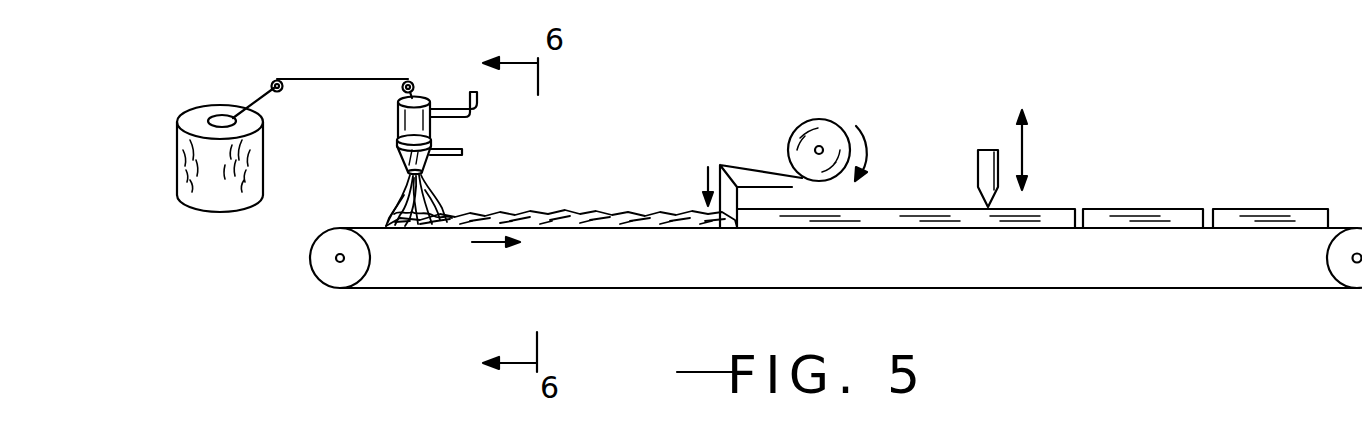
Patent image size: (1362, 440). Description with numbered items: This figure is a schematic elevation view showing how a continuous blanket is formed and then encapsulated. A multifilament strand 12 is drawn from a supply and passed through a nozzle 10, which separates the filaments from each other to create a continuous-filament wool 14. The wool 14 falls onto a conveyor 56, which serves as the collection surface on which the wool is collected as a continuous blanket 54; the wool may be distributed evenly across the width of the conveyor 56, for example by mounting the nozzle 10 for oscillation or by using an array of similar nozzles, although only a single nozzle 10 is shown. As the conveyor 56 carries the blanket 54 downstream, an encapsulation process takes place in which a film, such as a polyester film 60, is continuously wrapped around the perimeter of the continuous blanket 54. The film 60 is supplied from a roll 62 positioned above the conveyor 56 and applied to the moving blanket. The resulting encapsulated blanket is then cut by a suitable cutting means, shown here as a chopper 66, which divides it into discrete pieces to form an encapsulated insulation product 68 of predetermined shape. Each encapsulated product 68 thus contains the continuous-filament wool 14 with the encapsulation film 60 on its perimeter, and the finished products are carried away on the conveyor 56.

The nozzle 10 is at (384, 118).
The multifilament strand 12 is at (345, 79).
The continuous-filament wool 14 is at (406, 195).
The continuous blanket 54 is at (592, 216).
The conveyor 56 is at (346, 226).
The polyester film 60 is at (746, 163).
The roll 62 is at (830, 120).
The chopper 66 is at (978, 166).
The encapsulated insulation product 68 is at (1235, 209).